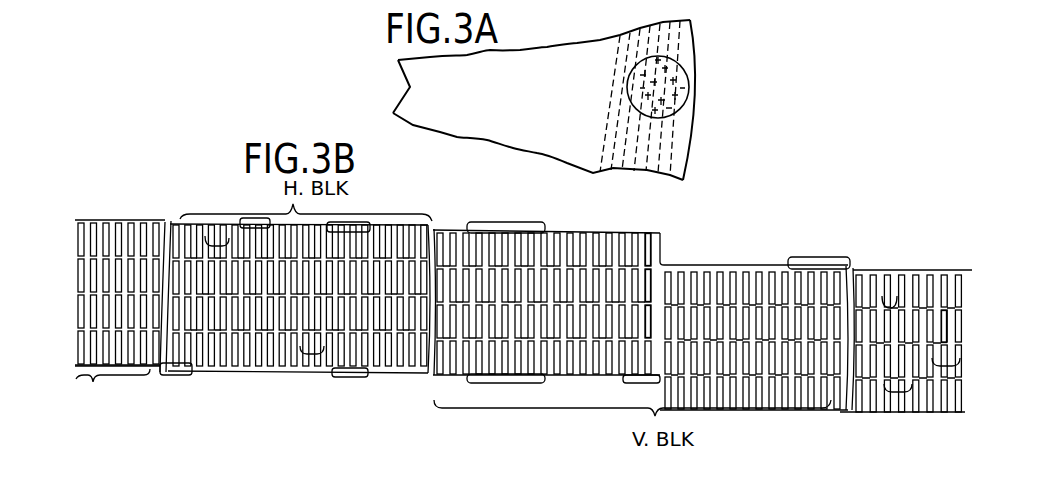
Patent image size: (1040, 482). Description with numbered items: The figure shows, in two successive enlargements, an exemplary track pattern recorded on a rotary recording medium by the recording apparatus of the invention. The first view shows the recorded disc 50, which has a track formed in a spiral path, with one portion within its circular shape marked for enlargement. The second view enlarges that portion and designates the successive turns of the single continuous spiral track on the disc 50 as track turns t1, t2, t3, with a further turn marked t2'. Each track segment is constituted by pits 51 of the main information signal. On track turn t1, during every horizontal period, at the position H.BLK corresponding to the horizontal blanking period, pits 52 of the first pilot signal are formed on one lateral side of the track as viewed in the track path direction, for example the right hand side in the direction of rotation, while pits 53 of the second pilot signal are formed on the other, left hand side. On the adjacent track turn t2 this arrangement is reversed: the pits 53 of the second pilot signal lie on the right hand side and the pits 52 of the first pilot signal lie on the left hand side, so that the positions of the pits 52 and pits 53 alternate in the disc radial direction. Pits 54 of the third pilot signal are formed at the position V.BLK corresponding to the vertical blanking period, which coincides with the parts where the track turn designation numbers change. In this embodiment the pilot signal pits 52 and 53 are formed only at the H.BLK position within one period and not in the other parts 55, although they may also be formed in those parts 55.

In FIG. 3A, the recorded disc 50 is at (693, 68).
In FIG. 3B, the pits of the main information signal 51 is at (121, 232).
In FIG. 3B, the pits of the first pilot signal fp1 52 is at (212, 237).
In FIG. 3B, the pits of the second pilot signal fp2 53 is at (263, 226).
In FIG. 3B, the pits of the third pilot signal fp3 54 is at (528, 226).
In FIG. 3B, the other parts of the track 55 is at (117, 389).
In FIG. 3B, the track turn t1 is at (648, 248).
In FIG. 3B, the adjacent track turn t2 is at (685, 264).
In FIG. 3B, the track turn t3 is at (653, 323).
In FIG. 3B, the track turn t2' is at (970, 327).